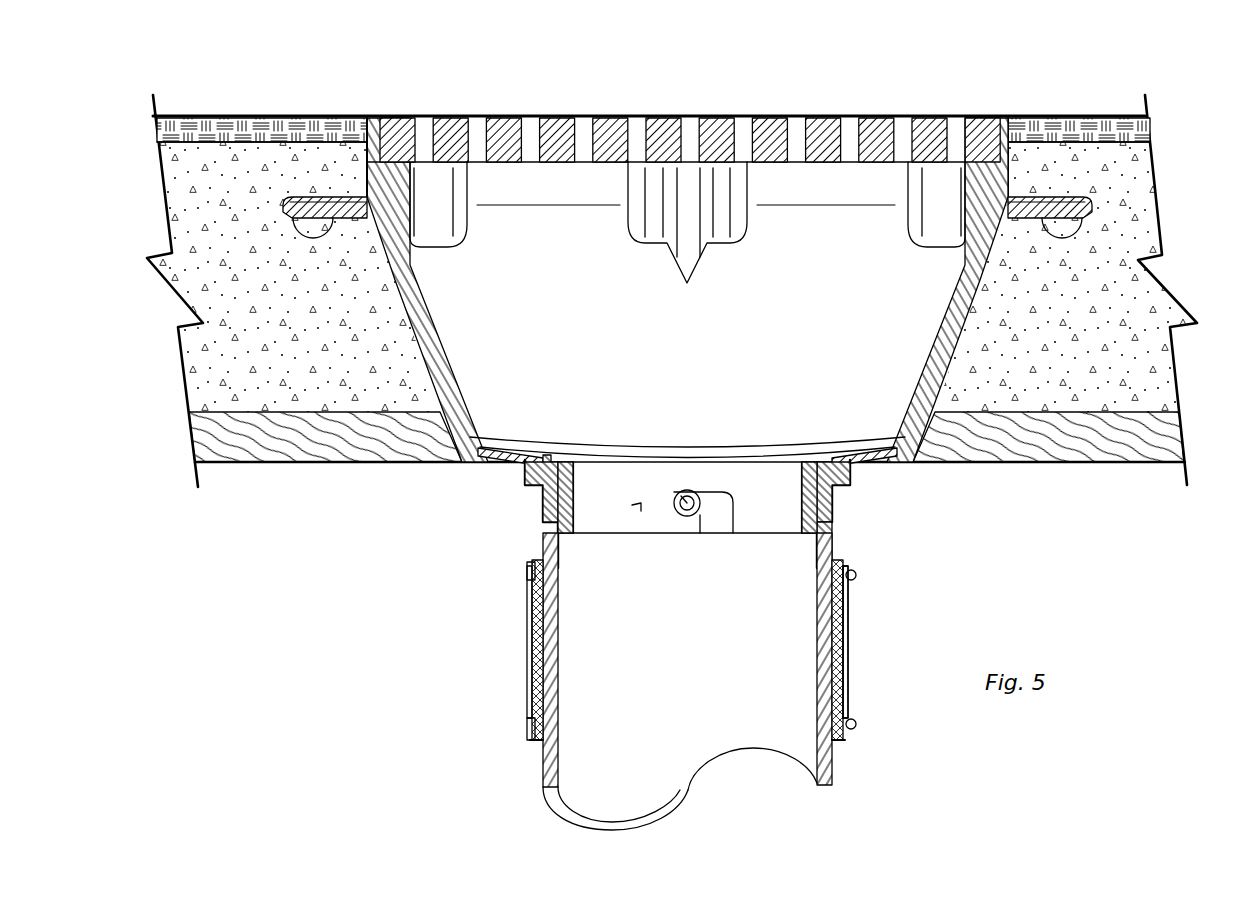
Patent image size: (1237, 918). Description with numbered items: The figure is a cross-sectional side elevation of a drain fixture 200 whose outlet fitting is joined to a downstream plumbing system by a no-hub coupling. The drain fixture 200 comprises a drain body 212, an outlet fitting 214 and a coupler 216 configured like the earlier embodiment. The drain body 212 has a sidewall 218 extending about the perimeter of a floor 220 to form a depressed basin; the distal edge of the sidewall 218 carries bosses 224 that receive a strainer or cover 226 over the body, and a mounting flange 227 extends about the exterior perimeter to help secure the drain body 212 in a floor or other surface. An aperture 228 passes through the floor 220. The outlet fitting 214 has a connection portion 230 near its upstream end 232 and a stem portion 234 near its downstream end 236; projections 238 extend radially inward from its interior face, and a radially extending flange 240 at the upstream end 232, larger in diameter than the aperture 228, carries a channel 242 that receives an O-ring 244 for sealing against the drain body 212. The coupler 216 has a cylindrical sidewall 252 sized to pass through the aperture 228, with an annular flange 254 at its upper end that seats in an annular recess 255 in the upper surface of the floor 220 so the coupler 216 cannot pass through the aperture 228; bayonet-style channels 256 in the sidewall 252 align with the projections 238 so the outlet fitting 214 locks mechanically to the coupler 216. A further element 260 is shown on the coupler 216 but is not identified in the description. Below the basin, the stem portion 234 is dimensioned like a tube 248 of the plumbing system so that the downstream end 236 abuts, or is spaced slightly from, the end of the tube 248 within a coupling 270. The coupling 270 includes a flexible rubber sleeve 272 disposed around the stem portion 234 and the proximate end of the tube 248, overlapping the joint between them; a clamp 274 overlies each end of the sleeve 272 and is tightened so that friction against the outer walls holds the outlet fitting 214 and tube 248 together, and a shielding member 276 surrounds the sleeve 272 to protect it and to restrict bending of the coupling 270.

The drain fixture 200 is at (1004, 72).
The drain body 212 is at (822, 290).
The outlet fitting 214 is at (560, 607).
The coupler 216 is at (655, 478).
The sidewall 218 is at (957, 340).
The floor 220 is at (485, 436).
The bosses 224 is at (748, 188).
The cover 226 is at (713, 116).
The mounting flange 227 is at (1085, 205).
The aperture 228 is at (688, 382).
The connection portion 230 is at (832, 502).
The upstream end 232 is at (866, 478).
The stem portion 234 is at (840, 540).
The downstream end 236 is at (818, 650).
The projections 238 is at (692, 492).
The flange 240 is at (523, 476).
The channel 242 is at (545, 493).
The O-ring 244 is at (546, 456).
The tube 248 is at (833, 786).
The cylindrical sidewall 252 is at (641, 510).
The annular flange 254 is at (563, 455).
The annular recess 255 is at (850, 455).
The bayonet-style channels 256 is at (735, 512).
The washer 260 is at (684, 517).
The coupling 270 is at (858, 651).
The sleeve 272 is at (540, 744).
The clamps 274 is at (525, 572).
The shielding member 276 is at (526, 673).